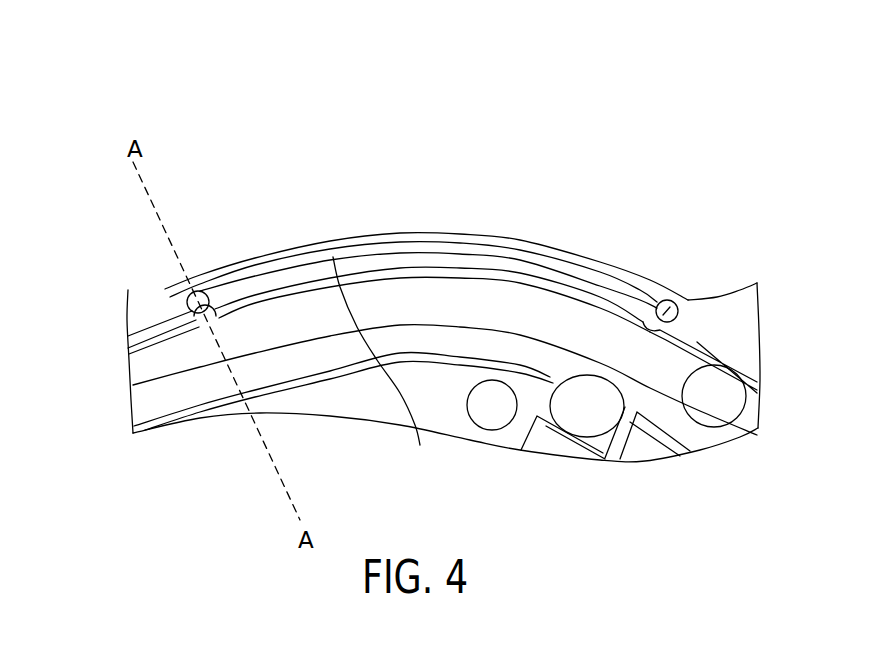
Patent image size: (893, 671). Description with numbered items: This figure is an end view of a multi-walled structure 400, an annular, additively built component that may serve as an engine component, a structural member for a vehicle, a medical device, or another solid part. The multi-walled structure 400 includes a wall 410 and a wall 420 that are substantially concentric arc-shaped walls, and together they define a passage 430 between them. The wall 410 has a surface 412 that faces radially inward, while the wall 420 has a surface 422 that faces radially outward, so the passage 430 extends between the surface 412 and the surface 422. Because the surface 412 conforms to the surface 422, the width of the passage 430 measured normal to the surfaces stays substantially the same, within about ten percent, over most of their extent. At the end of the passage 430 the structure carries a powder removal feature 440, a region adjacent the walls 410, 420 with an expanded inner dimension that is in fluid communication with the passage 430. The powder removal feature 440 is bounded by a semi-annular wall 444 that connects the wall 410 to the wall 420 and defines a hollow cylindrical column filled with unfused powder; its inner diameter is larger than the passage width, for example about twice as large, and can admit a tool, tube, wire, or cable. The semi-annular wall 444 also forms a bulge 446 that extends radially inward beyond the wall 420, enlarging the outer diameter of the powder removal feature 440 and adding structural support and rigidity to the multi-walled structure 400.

The multi-walled structure 400 is at (130, 76).
The wall 410 is at (288, 238).
The surface 412 is at (577, 257).
The wall 420 is at (387, 246).
The surface 422 is at (417, 446).
The passage 430 is at (532, 260).
The powder removal feature 440 is at (175, 301).
The semi-annular wall 444 is at (127, 349).
The bulge 446 is at (216, 320).